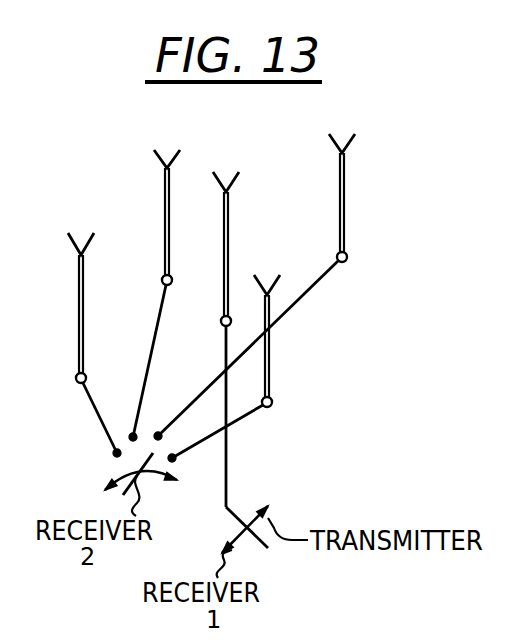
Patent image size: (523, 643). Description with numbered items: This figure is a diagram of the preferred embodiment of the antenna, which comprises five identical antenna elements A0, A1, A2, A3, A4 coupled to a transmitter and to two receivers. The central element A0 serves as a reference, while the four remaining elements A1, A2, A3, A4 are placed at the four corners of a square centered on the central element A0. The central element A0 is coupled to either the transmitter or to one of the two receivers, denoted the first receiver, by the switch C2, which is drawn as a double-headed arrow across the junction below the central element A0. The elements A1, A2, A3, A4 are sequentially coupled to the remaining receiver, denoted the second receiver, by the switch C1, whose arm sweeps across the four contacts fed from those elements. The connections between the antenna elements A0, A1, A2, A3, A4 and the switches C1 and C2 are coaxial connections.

The central antenna element A0 is at (239, 339).
The antenna element A1 is at (268, 287).
The antenna element A2 is at (168, 295).
The antenna element A3 is at (81, 345).
The antenna element A4 is at (237, 368).
The switch C1 is at (142, 484).
The switch C2 is at (252, 517).